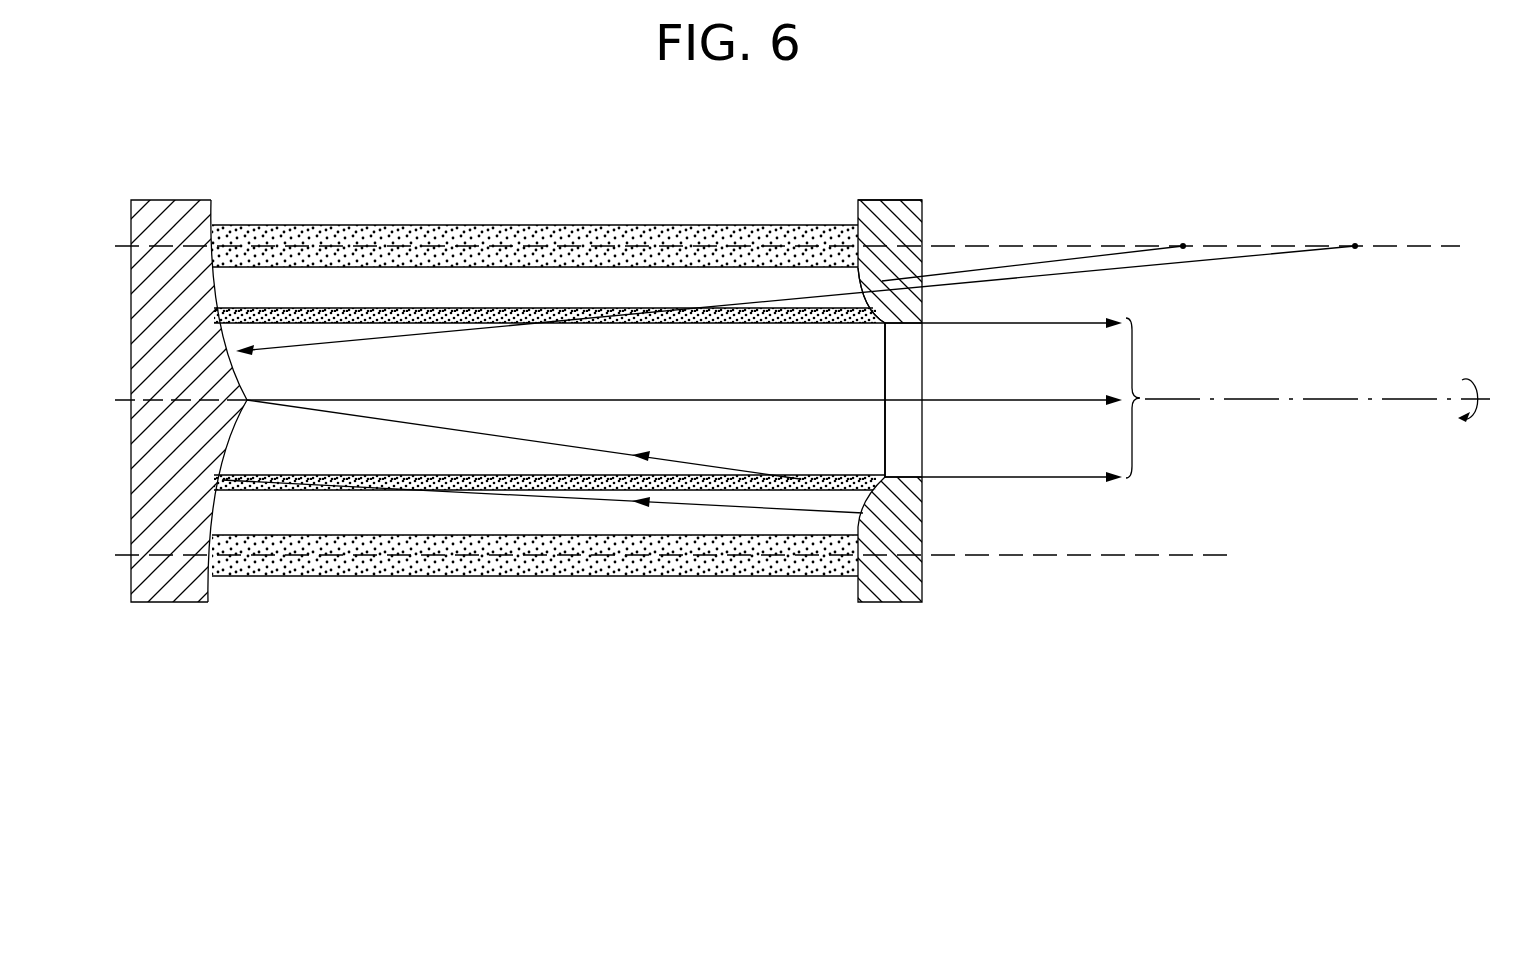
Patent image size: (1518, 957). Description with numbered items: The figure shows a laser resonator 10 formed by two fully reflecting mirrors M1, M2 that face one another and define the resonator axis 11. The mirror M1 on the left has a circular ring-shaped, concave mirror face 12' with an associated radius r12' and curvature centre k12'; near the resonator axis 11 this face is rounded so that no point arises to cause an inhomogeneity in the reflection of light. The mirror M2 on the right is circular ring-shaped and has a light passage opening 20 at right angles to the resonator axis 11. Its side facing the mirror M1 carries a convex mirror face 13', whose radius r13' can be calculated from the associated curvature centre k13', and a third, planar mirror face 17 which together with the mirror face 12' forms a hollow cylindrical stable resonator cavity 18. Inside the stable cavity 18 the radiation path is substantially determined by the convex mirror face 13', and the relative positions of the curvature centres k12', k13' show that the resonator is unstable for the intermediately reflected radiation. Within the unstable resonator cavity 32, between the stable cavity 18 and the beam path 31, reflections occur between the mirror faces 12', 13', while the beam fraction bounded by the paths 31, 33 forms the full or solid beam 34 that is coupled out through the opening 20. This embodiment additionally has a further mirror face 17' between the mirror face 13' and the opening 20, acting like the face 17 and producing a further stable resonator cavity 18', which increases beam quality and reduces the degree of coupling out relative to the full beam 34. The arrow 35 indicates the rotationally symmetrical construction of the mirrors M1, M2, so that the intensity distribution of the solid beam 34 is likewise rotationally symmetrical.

The resonator 10 is at (330, 616).
The resonator axis 11 is at (590, 400).
The concave mirror face 12' is at (233, 377).
The radius of mirror face 12' r12' is at (795, 266).
The curvature centre of mirror face 12' k12' is at (1388, 220).
The convex mirror face 13' is at (820, 249).
The radius of mirror face 13' r13' is at (1032, 236).
The curvature centre of mirror face 13' k13' is at (1208, 220).
The planar mirror face 17 is at (880, 171).
The further mirror face 17' is at (857, 400).
The stable resonator cavity 18 is at (535, 222).
The further stable resonator cavity 18' is at (549, 335).
The light passage opening 20 is at (915, 445).
The beam path 31 is at (690, 512).
The unstable resonator cavity 32 is at (435, 527).
The beam path 33 is at (706, 462).
The full or solid beam 34 is at (1026, 400).
The arrow indicating rotational symmetry 35 is at (1466, 424).
The mirror M1 is at (192, 606).
The mirror M2 is at (898, 606).